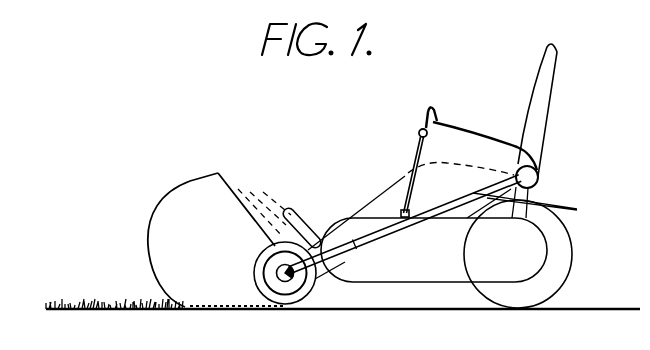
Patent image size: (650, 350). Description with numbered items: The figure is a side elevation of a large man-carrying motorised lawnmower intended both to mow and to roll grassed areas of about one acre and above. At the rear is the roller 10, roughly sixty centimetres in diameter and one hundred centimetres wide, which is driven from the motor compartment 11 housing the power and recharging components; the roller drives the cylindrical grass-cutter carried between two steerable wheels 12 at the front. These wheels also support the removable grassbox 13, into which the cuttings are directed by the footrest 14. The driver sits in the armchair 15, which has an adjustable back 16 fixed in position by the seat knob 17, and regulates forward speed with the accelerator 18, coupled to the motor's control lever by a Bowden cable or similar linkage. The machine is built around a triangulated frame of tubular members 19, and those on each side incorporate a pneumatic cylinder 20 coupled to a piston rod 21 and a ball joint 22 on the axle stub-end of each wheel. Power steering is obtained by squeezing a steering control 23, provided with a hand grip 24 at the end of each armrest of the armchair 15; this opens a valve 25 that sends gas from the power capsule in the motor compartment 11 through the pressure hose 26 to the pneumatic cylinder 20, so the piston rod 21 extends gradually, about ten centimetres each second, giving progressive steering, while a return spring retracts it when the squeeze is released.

The roller 10 is at (569, 262).
The motor compartment 11 is at (473, 263).
The steerable wheels 12 is at (305, 292).
The grassbox 13 is at (185, 226).
The footrest 14 is at (297, 210).
The armchair 15 is at (441, 161).
The adjustable back 16 is at (551, 90).
The seat knob 17 is at (539, 177).
The accelerator 18 is at (305, 222).
The tubular members 19 is at (539, 205).
The pneumatic cylinder 20 is at (395, 234).
The piston rod 21 is at (342, 258).
The ball joint 22 is at (280, 277).
The steering control 23 is at (422, 114).
The hand grip 24 is at (433, 116).
The valve 25 is at (418, 134).
The pressure hose 26 is at (399, 185).